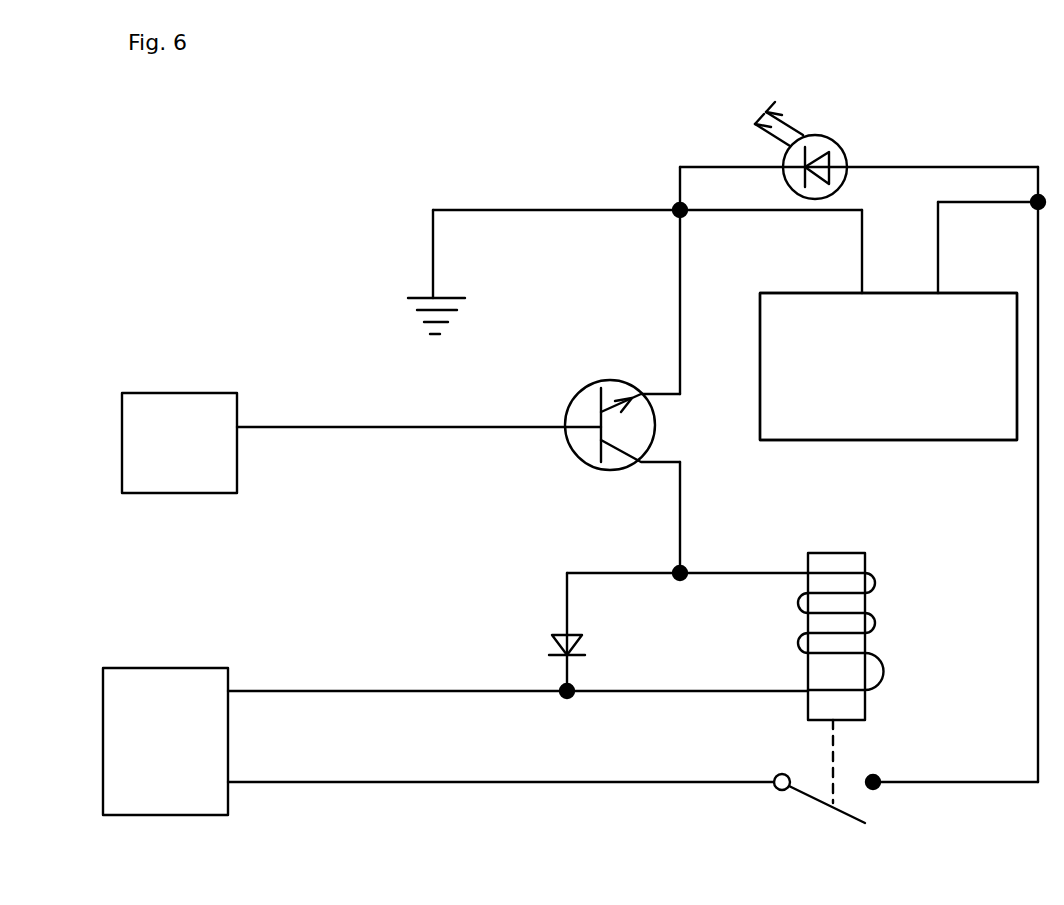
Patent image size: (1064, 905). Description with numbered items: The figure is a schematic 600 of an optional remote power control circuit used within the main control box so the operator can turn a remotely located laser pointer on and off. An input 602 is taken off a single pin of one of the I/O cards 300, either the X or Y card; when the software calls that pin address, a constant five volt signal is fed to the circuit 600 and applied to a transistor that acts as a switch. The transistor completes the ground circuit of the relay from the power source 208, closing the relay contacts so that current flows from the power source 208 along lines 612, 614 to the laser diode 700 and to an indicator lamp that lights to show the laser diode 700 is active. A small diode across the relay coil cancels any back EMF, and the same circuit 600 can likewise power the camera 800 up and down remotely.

The schematic of remote power control circuit 600 is at (505, 91).
The inputs 602 is at (347, 428).
The line 612 is at (342, 688).
The line 614 is at (335, 783).
The power source 208 is at (188, 761).
The I/O card 300 is at (212, 431).
The laser diode 700 is at (907, 326).
The camera 800 is at (910, 376).